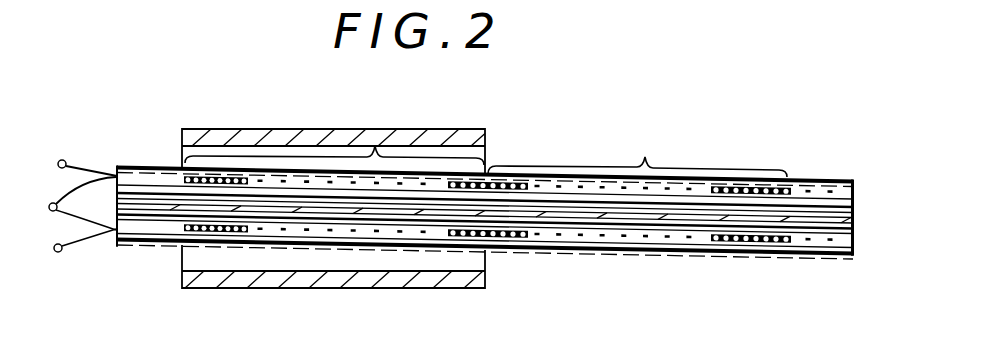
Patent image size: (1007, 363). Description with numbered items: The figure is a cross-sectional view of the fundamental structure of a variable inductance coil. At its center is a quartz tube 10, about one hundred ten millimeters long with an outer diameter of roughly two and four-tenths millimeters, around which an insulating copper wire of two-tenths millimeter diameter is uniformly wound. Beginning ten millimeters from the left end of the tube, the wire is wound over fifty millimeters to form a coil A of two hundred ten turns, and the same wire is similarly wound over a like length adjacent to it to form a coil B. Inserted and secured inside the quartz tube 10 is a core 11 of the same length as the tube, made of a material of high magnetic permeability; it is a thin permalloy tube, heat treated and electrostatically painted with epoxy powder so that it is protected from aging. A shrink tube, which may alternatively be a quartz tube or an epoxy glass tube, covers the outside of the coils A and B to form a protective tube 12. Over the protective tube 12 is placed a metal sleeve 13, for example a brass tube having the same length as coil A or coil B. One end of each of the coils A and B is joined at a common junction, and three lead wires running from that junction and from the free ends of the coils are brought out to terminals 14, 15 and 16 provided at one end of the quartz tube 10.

The quartz tube 10 is at (827, 203).
The core 11 is at (853, 218).
The protective tube 12 is at (797, 180).
The metal sleeve 13 is at (273, 137).
The terminal 14 is at (51, 211).
The terminal 15 is at (63, 159).
The terminal 16 is at (61, 252).
The coil A is at (334, 129).
The coil B is at (637, 149).